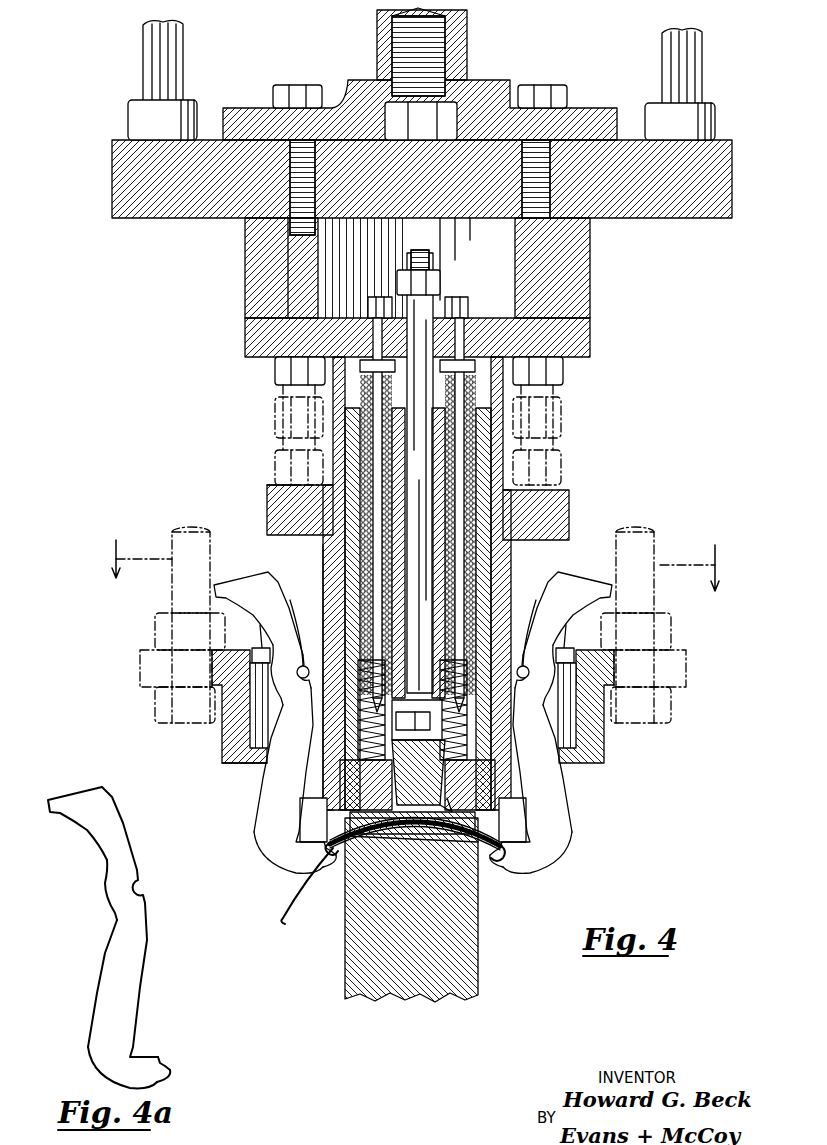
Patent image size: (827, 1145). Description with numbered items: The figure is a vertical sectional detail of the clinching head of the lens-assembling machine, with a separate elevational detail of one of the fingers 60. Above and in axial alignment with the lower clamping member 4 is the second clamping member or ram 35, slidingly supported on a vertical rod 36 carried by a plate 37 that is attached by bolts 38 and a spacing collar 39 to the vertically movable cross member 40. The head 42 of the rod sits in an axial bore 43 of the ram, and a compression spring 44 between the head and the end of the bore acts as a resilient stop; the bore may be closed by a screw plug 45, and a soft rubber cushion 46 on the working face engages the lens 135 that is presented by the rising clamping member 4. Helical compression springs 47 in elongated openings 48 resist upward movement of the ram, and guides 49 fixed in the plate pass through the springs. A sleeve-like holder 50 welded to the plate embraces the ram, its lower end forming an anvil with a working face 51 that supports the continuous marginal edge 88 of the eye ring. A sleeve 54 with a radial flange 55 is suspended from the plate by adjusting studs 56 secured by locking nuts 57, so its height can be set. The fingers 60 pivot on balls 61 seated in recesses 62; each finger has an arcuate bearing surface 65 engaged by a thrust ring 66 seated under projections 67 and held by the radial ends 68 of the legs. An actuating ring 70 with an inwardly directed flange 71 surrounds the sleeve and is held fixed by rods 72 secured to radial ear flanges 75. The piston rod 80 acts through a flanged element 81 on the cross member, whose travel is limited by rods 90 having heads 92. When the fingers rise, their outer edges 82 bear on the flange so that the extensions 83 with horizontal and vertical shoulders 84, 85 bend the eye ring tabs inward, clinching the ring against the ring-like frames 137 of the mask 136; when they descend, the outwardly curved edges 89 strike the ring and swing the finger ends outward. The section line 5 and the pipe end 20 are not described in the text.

In FIG. 4, the clamping member 4 is at (478, 975).
In FIG. 4, the section line 5- 5 is at (417, 548).
In FIG. 4, the pipe end 20 is at (395, 850).
In FIG. 4, the second clamping member 35 is at (505, 512).
In FIG. 4, the vertical rod 36 is at (428, 320).
In FIG. 4, the plate 37 is at (592, 340).
In FIG. 4, the bolts 38 is at (245, 302).
In FIG. 4, the spacing collar 39 is at (245, 272).
In FIG. 4, the cross member 40 is at (180, 218).
In FIG. 4, the head 42 is at (415, 742).
In FIG. 4, the axial bore 43 is at (393, 600).
In FIG. 4, the compression spring 44 is at (418, 772).
In FIG. 4, the screw plug 45 is at (410, 822).
In FIG. 4, the soft rubber cushion 46 is at (462, 806).
In FIG. 4, the helical compression springs 47 is at (417, 609).
In FIG. 4, the elongated openings 48 is at (345, 576).
In FIG. 4, the guides 49 is at (333, 553).
In FIG. 4, the sleeve-like holder 50 is at (332, 518).
In FIG. 4, the working face 51 is at (528, 822).
In FIG. 4, the sleeve 54 is at (327, 596).
In FIG. 4, the radial flange 55 is at (268, 490).
In FIG. 4, the adjusting studs 56 is at (275, 418).
In FIG. 4, the locking nuts 57 is at (275, 468).
In FIG. 4, the fingers 60 is at (253, 845).
In FIG. 4a, the fingers 60 is at (92, 1045).
In FIG. 4, the balls 61 is at (298, 660).
In FIG. 4, the recesses 62 is at (302, 680).
In FIG. 4a, the recesses 62 is at (142, 890).
In FIG. 4, the arcuate bearing surface 65 is at (277, 705).
In FIG. 4a, the arcuate bearing surface 65 is at (105, 893).
In FIG. 4, the thrust ring 66 is at (600, 655).
In FIG. 4, the projections 67 is at (260, 625).
In FIG. 4, the radial ends 68 is at (245, 733).
In FIG. 4, the actuating ring 70 is at (225, 750).
In FIG. 4, the inwardly directed flange 71 is at (262, 762).
In FIG. 4, the rods 72 is at (172, 535).
In FIG. 4, the radial ear flanges 75 is at (688, 662).
In FIG. 4, the rod 80 is at (467, 48).
In FIG. 4, the flanged element 81 is at (585, 118).
In FIG. 4, the outer edges 82 is at (572, 792).
In FIG. 4a, the outer edges 82 is at (100, 980).
In FIG. 4, the extensions 83 is at (298, 874).
In FIG. 4a, the extensions 83 is at (165, 1080).
In FIG. 4, the horizontal shoulder 84 is at (502, 868).
In FIG. 4a, the horizontal shoulder 84 is at (172, 1068).
In FIG. 4, the vertical shoulder 85 is at (512, 847).
In FIG. 4a, the vertical shoulder 85 is at (163, 1062).
In FIG. 4, the continuous marginal edge 88 is at (314, 820).
In FIG. 4, the outwardly curved edges 89 is at (220, 587).
In FIG. 4a, the outwardly curved edges 89 is at (78, 828).
In FIG. 4, the rods 90 is at (183, 50).
In FIG. 4, the heads 92 is at (132, 118).
In FIG. 4, the lens 135 is at (455, 835).
In FIG. 4, the mask 136 is at (288, 920).
In FIG. 4, the ring-like frames 137 is at (325, 846).